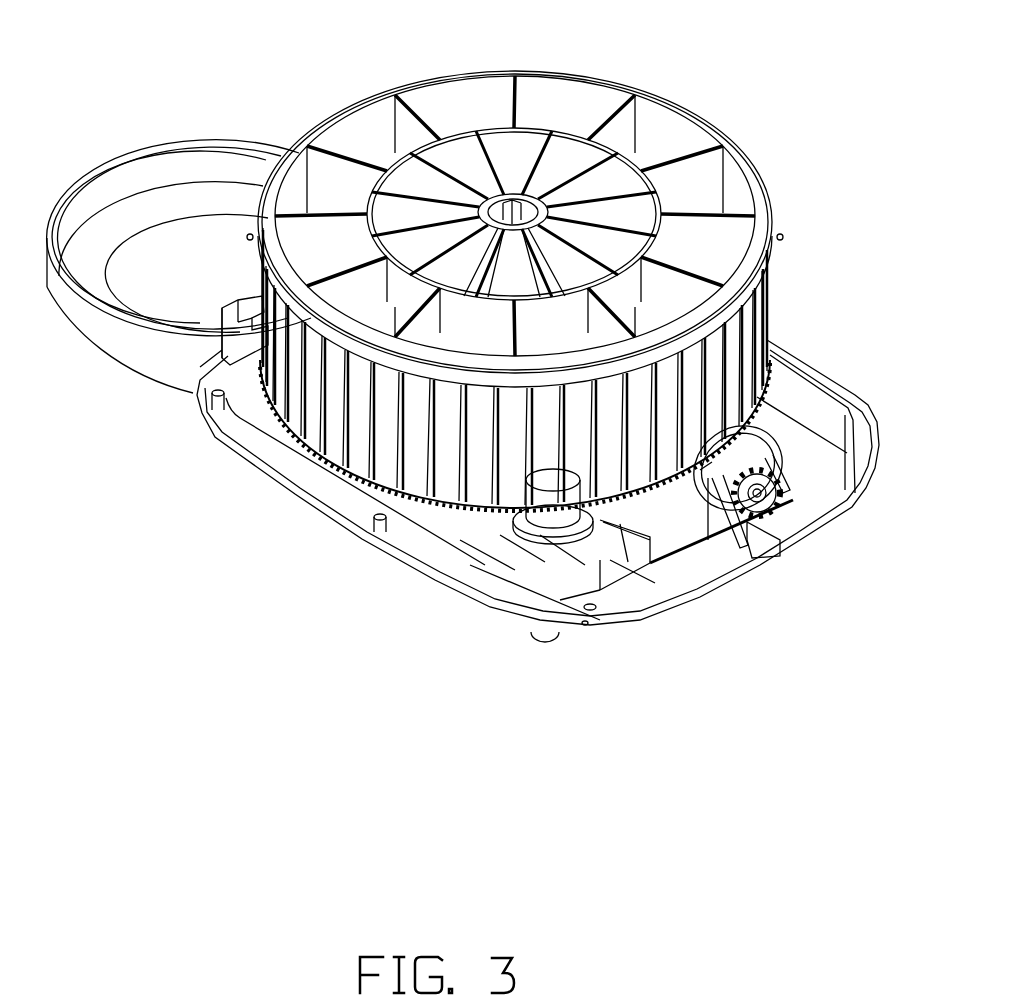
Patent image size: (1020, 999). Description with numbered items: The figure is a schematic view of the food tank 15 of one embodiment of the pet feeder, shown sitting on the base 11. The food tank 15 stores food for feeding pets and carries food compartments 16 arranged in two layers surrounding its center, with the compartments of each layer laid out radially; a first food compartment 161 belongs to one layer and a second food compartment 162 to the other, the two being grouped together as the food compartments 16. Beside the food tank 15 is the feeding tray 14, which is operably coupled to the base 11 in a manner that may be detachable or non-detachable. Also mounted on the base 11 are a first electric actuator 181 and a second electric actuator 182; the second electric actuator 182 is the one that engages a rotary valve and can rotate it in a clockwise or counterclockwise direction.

The base 11 is at (437, 550).
The feeding tray 14 is at (190, 160).
The food tank 15 is at (787, 210).
The food compartments 16 is at (534, 193).
The first food compartment 161 is at (516, 150).
The second food compartment 162 is at (672, 128).
The first electric actuator 181 is at (781, 488).
The second electric actuator 182 is at (553, 512).